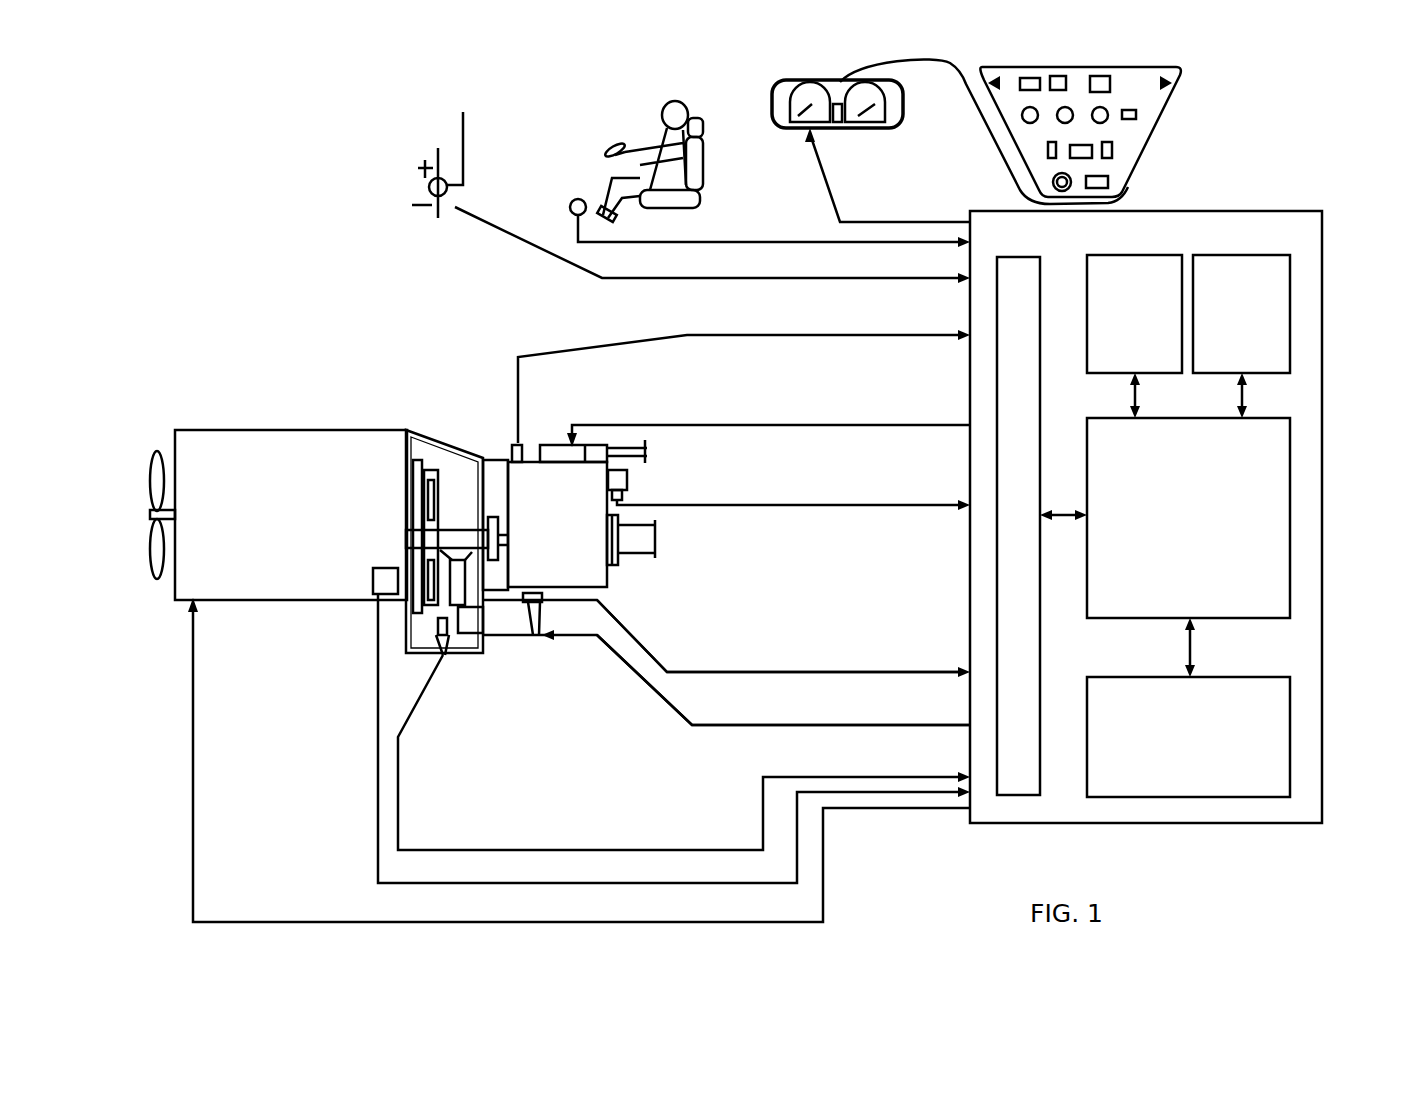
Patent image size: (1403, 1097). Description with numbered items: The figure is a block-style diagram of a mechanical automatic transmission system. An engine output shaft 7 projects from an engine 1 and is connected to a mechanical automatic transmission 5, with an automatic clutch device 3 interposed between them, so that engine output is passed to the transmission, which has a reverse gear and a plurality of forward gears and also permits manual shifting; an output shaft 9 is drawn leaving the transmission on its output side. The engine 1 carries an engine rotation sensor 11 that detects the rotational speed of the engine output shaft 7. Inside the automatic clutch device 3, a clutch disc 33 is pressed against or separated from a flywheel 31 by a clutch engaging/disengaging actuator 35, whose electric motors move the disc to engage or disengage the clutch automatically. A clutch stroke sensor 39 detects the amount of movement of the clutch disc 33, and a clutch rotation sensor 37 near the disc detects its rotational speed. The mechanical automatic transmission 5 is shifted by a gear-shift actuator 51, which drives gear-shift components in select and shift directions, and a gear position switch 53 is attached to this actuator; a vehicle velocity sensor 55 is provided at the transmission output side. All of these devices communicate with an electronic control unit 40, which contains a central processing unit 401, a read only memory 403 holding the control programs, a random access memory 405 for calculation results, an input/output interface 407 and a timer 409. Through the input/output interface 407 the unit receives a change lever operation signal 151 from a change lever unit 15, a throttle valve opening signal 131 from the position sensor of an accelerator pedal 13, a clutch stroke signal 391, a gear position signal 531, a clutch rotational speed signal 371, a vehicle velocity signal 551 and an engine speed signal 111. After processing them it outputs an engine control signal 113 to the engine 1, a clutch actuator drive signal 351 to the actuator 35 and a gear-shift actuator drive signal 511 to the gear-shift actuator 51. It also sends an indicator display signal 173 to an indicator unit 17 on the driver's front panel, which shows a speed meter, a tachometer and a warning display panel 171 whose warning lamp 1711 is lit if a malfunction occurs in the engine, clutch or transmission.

The engine 1 is at (158, 617).
The engine rotation sensor 11 is at (372, 603).
The engine speed signal 111 is at (420, 883).
The engine control signal 113 is at (420, 922).
The automatic clutch device 3 is at (656, 589).
The flywheel 31 is at (410, 437).
The clutch disc 33 is at (423, 467).
The clutch engaging/disengaging actuator 35 is at (525, 637).
The clutch actuator drive signal 351 is at (703, 725).
The clutch rotation sensor 37 is at (450, 655).
The clutch rotational speed signal 371 is at (420, 850).
The clutch stroke sensor 39 is at (538, 638).
The clutch stroke signal 391 is at (683, 672).
The mechanical automatic transmission 5 is at (627, 580).
The gear-shift actuator 51 is at (553, 433).
The gear-shift actuator drive signal 511 is at (670, 425).
The gear position switch 53 is at (520, 437).
The gear position signal 531 is at (685, 335).
The vehicle velocity sensor 55 is at (627, 478).
The vehicle velocity signal 551 is at (717, 505).
The engine output shaft 7 is at (407, 537).
The output shaft 9 is at (655, 540).
The accelerator pedal 13 is at (575, 190).
The throttle valve opening signal 131 is at (645, 243).
The change lever unit 15 is at (403, 133).
The change lever operation signal 151 is at (527, 245).
The indicator unit 17 is at (792, 128).
The warning display panel 171 is at (1160, 100).
The warning lamp 1711 is at (1128, 187).
The indicator display signal 173 is at (835, 138).
The electronic control unit 40 is at (1172, 517).
The central processing unit 401 is at (1150, 418).
The read only memory 403 is at (1213, 255).
The random access memory 405 is at (1112, 255).
The input/output interface 407 is at (1010, 255).
The timer 409 is at (1225, 677).